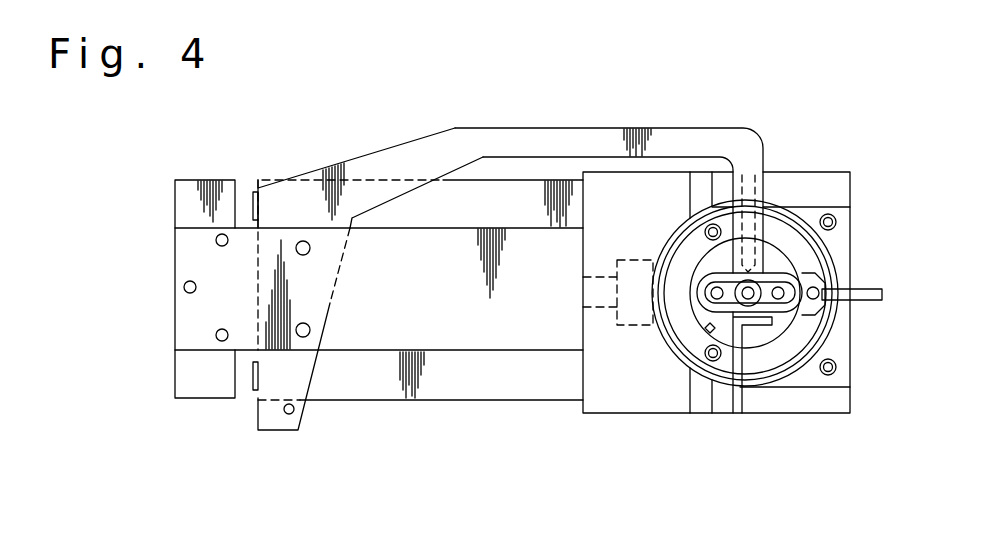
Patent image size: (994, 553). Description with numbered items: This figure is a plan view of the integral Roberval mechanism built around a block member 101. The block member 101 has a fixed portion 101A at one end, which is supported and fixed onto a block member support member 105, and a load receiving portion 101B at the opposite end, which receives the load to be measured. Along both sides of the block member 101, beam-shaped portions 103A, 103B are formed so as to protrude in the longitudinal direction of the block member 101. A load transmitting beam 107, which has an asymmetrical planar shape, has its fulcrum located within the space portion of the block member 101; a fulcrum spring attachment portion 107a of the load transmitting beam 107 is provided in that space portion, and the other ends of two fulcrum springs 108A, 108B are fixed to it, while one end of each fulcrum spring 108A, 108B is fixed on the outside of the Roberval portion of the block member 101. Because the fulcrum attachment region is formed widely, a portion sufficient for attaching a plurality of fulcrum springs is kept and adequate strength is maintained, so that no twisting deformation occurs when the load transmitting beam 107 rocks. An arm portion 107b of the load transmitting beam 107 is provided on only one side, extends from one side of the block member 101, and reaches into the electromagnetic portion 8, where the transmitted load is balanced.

The electromagnetic portion 8 is at (802, 220).
The block member 101 is at (453, 287).
The fixed portion 101A is at (548, 300).
The load receiving portion 101B is at (186, 322).
The beam-shaped portion 103A is at (481, 378).
The beam-shaped portion 103B is at (528, 210).
The block member support member 105 is at (620, 395).
The load transmitting beam 107 is at (350, 160).
The fulcrum spring attachment portion 107a is at (332, 305).
The arm portion 107b is at (615, 143).
The fulcrum spring 108A is at (253, 382).
The fulcrum spring 108B is at (253, 206).